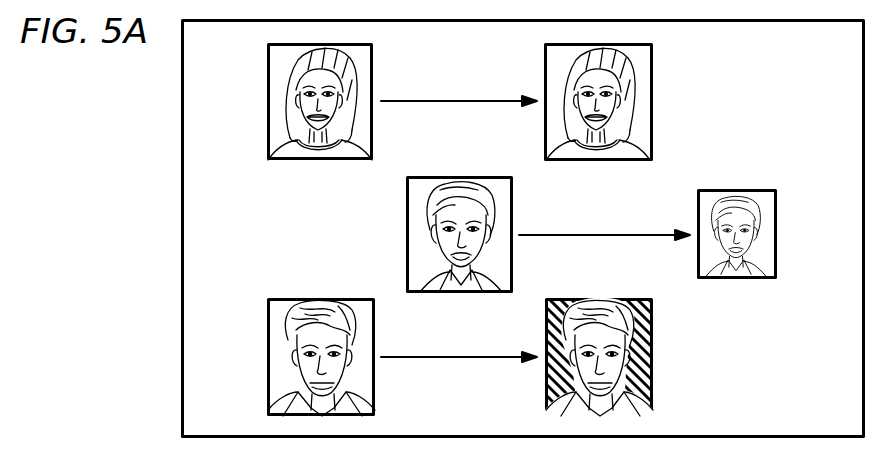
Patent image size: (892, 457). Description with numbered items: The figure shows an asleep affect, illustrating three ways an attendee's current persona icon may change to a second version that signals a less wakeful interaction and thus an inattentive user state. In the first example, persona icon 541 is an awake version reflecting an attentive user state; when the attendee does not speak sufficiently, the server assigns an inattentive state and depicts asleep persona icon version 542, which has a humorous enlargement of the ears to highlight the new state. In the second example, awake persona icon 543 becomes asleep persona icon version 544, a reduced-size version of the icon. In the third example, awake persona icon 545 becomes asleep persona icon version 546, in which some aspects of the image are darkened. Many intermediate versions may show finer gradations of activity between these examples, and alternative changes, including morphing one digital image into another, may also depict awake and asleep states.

The persona icon 541 is at (267, 93).
The asleep persona icon version 542 is at (653, 95).
The persona icon 543 is at (406, 242).
The asleep persona icon version 544 is at (777, 240).
The persona icon 545 is at (267, 377).
The asleep persona icon version 546 is at (653, 367).